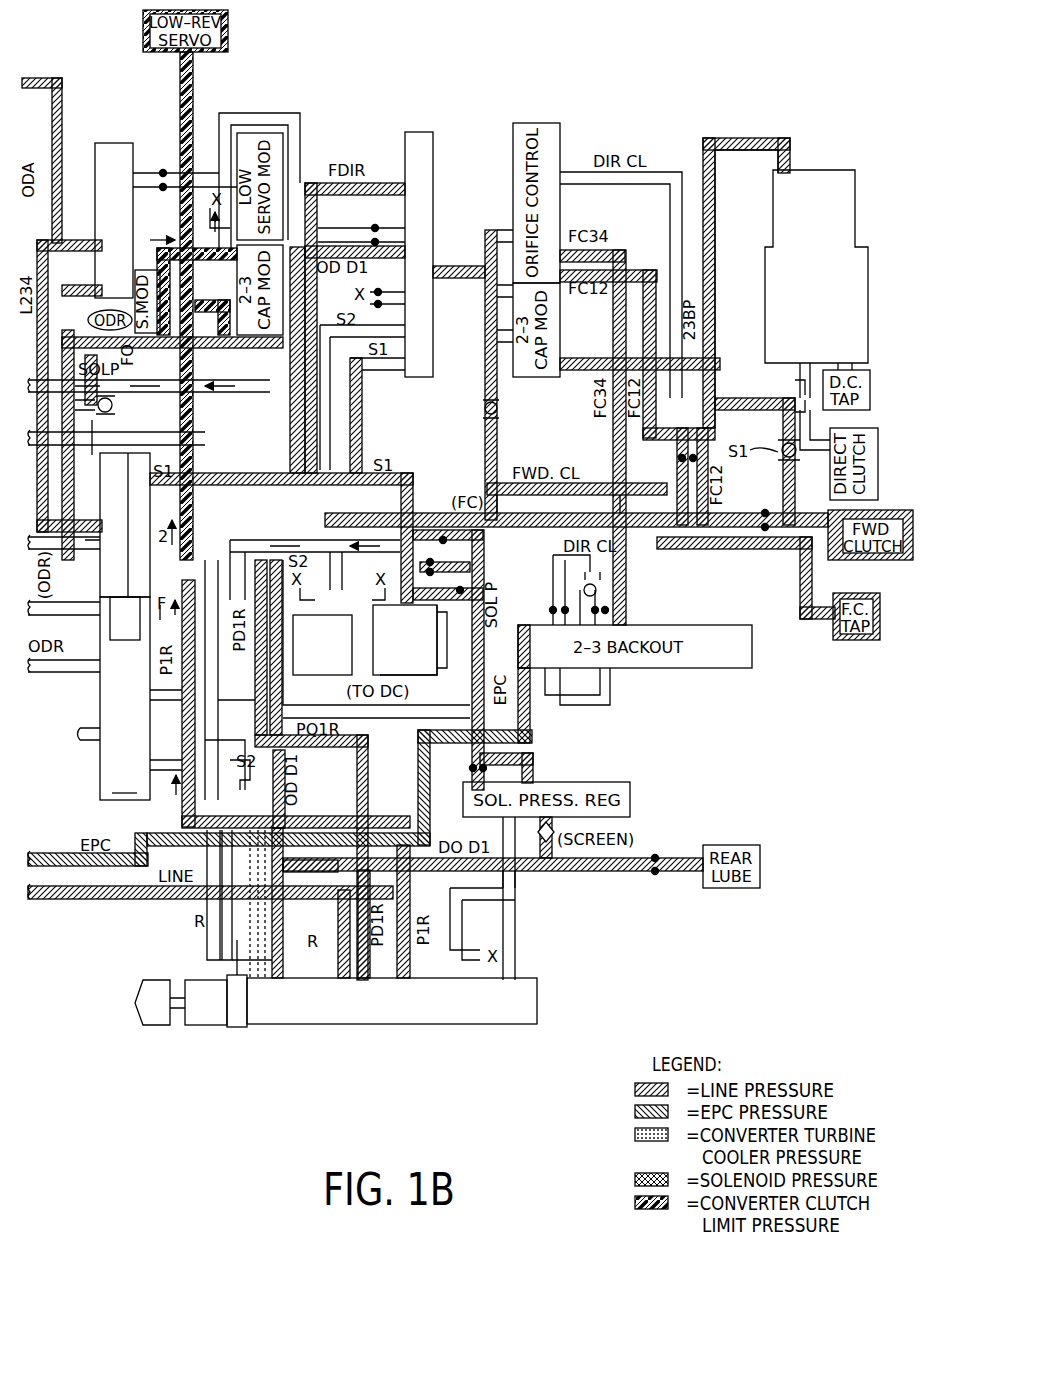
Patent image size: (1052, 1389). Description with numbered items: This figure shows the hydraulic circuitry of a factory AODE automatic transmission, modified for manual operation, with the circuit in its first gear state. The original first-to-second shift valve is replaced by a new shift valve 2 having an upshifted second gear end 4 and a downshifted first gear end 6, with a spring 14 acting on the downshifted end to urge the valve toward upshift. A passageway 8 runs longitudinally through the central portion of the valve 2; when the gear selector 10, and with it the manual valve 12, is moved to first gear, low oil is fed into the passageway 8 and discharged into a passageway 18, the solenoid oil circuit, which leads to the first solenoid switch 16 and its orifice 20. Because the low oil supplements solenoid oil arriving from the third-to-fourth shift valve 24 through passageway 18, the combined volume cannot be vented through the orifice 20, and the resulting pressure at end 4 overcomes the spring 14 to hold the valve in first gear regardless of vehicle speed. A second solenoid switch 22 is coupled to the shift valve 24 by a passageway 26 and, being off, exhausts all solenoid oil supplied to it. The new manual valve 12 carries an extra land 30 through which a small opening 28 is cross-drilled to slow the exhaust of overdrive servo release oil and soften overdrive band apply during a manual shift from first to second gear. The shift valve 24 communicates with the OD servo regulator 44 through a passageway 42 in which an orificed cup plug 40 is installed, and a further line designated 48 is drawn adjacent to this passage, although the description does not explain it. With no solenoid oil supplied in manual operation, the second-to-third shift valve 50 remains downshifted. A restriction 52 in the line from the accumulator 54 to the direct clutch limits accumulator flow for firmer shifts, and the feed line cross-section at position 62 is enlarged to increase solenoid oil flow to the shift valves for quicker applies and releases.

The 1-2 shift valve 2 is at (148, 532).
The upshifted position 4 is at (110, 449).
The downshifted position 6 is at (125, 618).
The passageway 8 is at (122, 495).
The gear selector 10 is at (135, 1003).
The manual valve 12 is at (350, 1025).
The spring 14 is at (125, 651).
The first solenoid switch 16 is at (437, 675).
The passageway 18 is at (392, 472).
The orifice 20 is at (405, 640).
The second solenoid switch 22 is at (320, 677).
The 3-4 shift valve 24 is at (433, 183).
The passageway 26 is at (362, 396).
The opening 28 is at (225, 1028).
The extra land 30 is at (234, 992).
The orificed cup plug 40 is at (298, 112).
The passageway 42 is at (328, 228).
The OD servo regulator 44 is at (103, 143).
The OD D1 passage 48 is at (392, 246).
The 2-3 shift valve 50 is at (124, 783).
The restriction 52 is at (800, 392).
The 2-3 accumulator 54 is at (816, 170).
The feed line position 62 is at (442, 530).